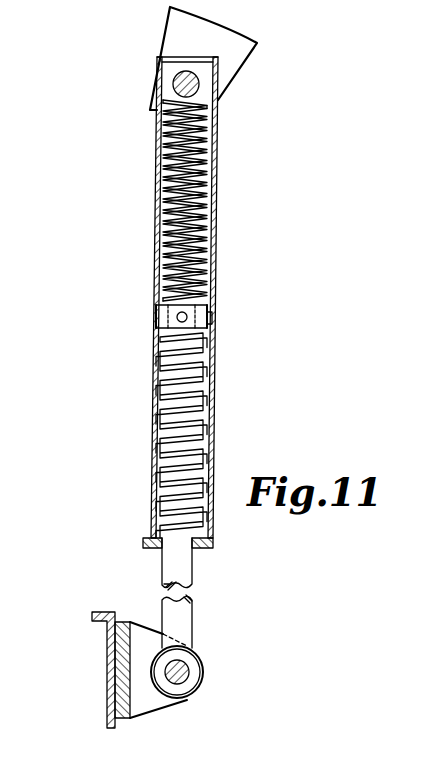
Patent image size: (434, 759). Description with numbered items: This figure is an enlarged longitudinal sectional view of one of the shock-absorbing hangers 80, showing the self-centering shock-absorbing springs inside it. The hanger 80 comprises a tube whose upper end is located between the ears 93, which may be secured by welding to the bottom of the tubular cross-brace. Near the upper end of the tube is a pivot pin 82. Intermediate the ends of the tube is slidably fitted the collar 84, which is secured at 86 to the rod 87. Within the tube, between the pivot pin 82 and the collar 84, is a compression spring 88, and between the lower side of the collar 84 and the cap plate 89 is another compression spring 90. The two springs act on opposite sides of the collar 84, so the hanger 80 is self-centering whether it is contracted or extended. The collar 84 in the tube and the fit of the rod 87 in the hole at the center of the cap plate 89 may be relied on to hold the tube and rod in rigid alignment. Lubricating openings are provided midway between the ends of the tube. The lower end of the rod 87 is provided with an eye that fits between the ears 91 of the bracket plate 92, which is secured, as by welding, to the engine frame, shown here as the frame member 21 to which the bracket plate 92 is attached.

The ears 93 is at (176, 33).
The pivot pin 82 is at (174, 80).
The biasing assembly 80 is at (221, 297).
The compression spring 88 is at (163, 232).
The collar securement 86 is at (179, 319).
The compression spring 90 is at (197, 398).
The cap plate 89 is at (143, 548).
The rod 87 is at (183, 560).
The bracket plate 92 is at (127, 622).
The wall 21 is at (110, 670).
The collar 84 is at (189, 673).
The ears 91 is at (158, 700).